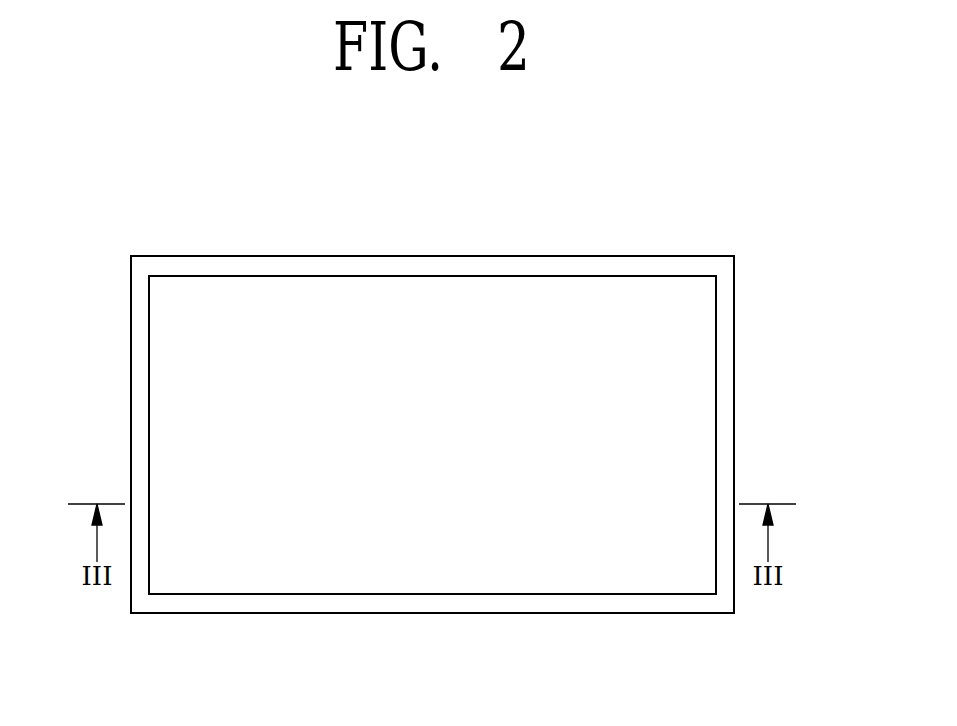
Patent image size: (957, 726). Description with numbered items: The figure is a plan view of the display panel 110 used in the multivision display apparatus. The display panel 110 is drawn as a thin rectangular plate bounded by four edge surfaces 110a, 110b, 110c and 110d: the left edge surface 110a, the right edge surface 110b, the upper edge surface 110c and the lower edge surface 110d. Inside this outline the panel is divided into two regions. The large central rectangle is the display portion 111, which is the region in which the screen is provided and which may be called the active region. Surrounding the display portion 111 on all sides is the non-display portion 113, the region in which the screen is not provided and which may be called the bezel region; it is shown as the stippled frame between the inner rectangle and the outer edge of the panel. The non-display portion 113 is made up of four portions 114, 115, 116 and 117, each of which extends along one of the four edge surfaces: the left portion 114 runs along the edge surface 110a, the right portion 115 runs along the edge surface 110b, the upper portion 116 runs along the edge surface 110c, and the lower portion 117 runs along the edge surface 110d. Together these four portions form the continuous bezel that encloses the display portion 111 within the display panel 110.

The display panel 110 is at (188, 141).
The edge surface 110a is at (131, 394).
The edge surface 110b is at (735, 397).
The edge surface 110c is at (326, 256).
The edge surface 110d is at (323, 614).
The display portion 111 is at (536, 297).
The non-display portion 113 is at (688, 242).
The portion of non-display portion 114 is at (140, 343).
The portion of non-display portion 115 is at (725, 344).
The portion of non-display portion 116 is at (452, 268).
The portion of non-display portion 117 is at (450, 603).